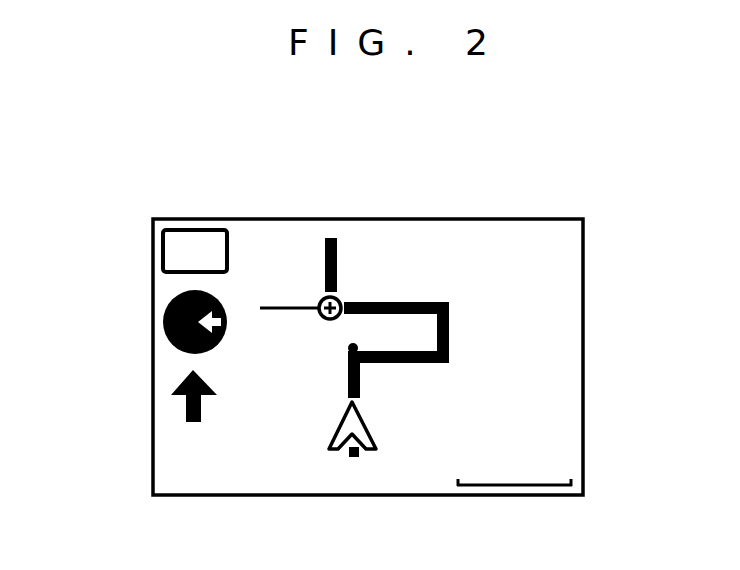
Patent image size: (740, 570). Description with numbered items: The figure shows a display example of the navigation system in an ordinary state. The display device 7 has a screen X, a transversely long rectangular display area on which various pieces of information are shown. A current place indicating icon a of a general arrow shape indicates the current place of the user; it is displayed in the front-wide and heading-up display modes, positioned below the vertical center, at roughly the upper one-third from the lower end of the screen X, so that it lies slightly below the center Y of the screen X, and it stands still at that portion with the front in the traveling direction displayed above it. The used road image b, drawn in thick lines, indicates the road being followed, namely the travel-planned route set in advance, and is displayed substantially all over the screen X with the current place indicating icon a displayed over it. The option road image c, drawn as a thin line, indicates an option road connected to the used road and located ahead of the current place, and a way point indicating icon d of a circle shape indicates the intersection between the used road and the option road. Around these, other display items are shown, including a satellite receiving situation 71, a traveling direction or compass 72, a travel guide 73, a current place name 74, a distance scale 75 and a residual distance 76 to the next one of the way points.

The display device 7 is at (168, 183).
The satellite receiving situation 71 is at (165, 232).
The traveling direction (compass) 72 is at (176, 302).
The travel guide 73 is at (180, 390).
The current place name 74 is at (158, 475).
The distance scale 75 is at (532, 452).
The residual distance 76 is at (572, 267).
The screen X is at (532, 218).
The center of the screen Y is at (348, 348).
The current place indicating icon a is at (363, 413).
The used road image b is at (428, 302).
The option road image c is at (292, 308).
The way point indicating icon d is at (340, 300).